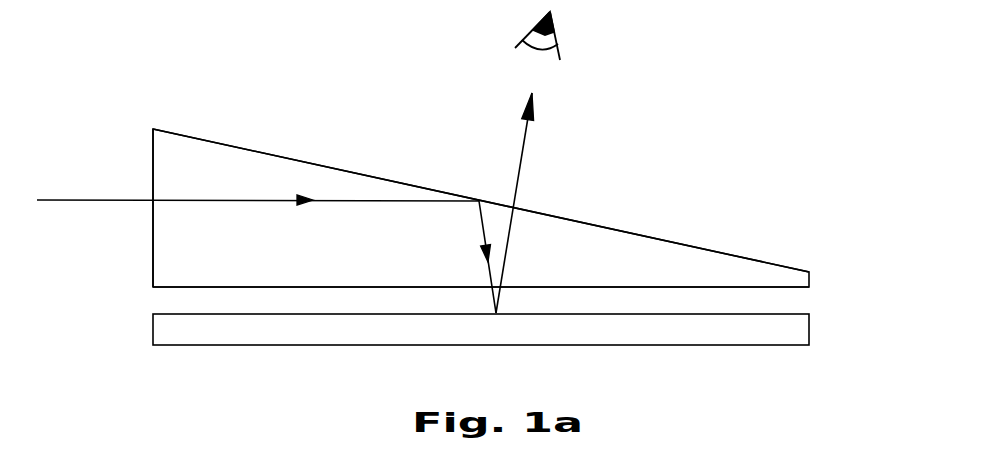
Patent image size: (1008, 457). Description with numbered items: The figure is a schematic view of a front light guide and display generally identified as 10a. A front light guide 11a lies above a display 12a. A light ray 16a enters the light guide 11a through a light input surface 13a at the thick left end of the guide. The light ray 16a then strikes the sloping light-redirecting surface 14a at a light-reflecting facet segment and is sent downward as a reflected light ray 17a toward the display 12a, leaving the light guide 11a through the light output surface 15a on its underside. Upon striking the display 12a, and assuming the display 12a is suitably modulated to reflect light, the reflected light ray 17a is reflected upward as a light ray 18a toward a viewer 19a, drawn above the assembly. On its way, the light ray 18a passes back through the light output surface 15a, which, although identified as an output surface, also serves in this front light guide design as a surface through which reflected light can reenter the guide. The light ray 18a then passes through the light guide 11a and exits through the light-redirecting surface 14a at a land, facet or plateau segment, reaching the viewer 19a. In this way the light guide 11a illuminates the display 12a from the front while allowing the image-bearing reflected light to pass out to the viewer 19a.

The front light guide and display 10a is at (692, 154).
The front light guide 11a is at (722, 265).
The display 12a is at (810, 331).
The light input surface 13a is at (153, 243).
The light-redirecting surface 14a is at (281, 156).
The light output surface 15a is at (752, 288).
The light ray 16a is at (94, 199).
The reflected light ray 17a is at (483, 237).
The light ray 18a is at (520, 178).
The viewer 19a is at (558, 38).